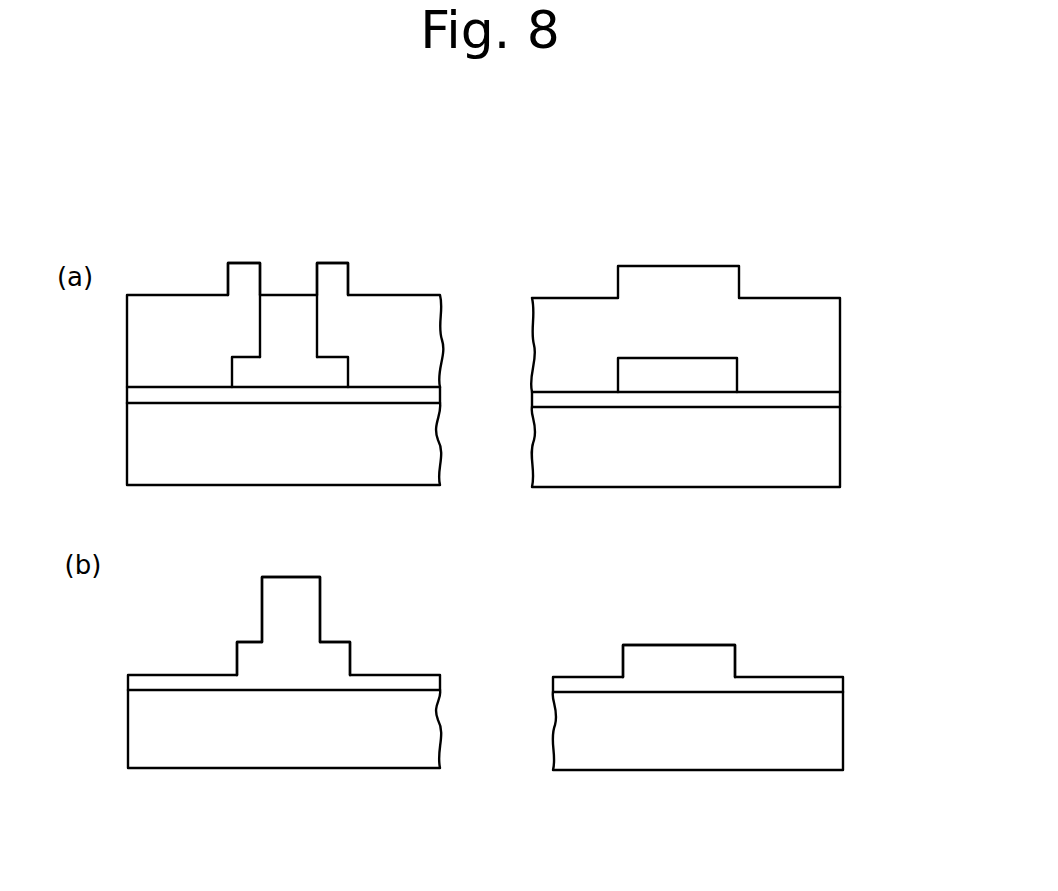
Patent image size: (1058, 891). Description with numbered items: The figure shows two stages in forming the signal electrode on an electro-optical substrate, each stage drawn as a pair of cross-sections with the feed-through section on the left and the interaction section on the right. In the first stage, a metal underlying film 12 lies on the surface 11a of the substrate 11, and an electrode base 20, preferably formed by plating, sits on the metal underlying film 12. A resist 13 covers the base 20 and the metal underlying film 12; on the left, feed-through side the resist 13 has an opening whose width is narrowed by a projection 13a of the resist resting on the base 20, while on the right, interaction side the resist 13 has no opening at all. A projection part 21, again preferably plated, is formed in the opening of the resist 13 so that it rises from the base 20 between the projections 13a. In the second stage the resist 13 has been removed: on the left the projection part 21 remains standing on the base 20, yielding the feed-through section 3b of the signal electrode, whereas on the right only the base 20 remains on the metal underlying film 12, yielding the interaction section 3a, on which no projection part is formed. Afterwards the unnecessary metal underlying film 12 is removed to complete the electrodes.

The substrate 11 is at (828, 466).
The surface of the substrate 11a is at (825, 407).
The metal underlying film 12 is at (805, 398).
The resist 13 is at (178, 310).
The projection 13a is at (242, 277).
The electrode base 20 is at (335, 378).
The projection part 21 is at (285, 305).
The interaction section 3a is at (688, 647).
The feed-through section 3b is at (336, 583).